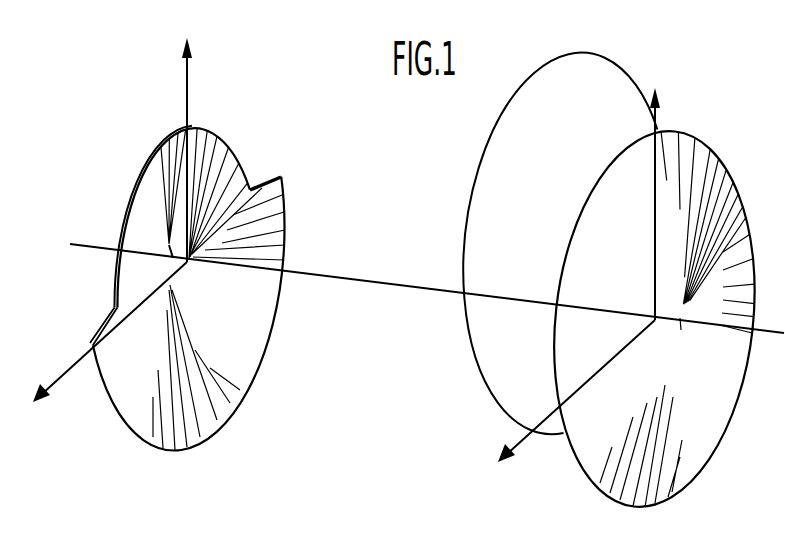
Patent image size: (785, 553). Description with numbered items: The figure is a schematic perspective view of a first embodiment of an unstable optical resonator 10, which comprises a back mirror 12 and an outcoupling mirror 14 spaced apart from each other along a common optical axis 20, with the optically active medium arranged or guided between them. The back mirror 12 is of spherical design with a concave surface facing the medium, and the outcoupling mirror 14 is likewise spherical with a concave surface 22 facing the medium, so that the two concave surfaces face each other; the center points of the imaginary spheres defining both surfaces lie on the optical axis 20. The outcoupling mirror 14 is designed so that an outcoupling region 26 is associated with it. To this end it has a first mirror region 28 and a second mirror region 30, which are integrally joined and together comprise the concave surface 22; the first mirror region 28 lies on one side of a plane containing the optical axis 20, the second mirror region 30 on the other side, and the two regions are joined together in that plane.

The unstable optical resonator 10 is at (471, 174).
The back mirror 12 is at (695, 448).
The outcoupling mirror 14 is at (212, 280).
The optical axis 20 is at (442, 293).
The concave surface 22 is at (260, 313).
The outcoupling region 26 is at (136, 122).
The first mirror region 28 is at (225, 392).
The second mirror region 30 is at (222, 157).